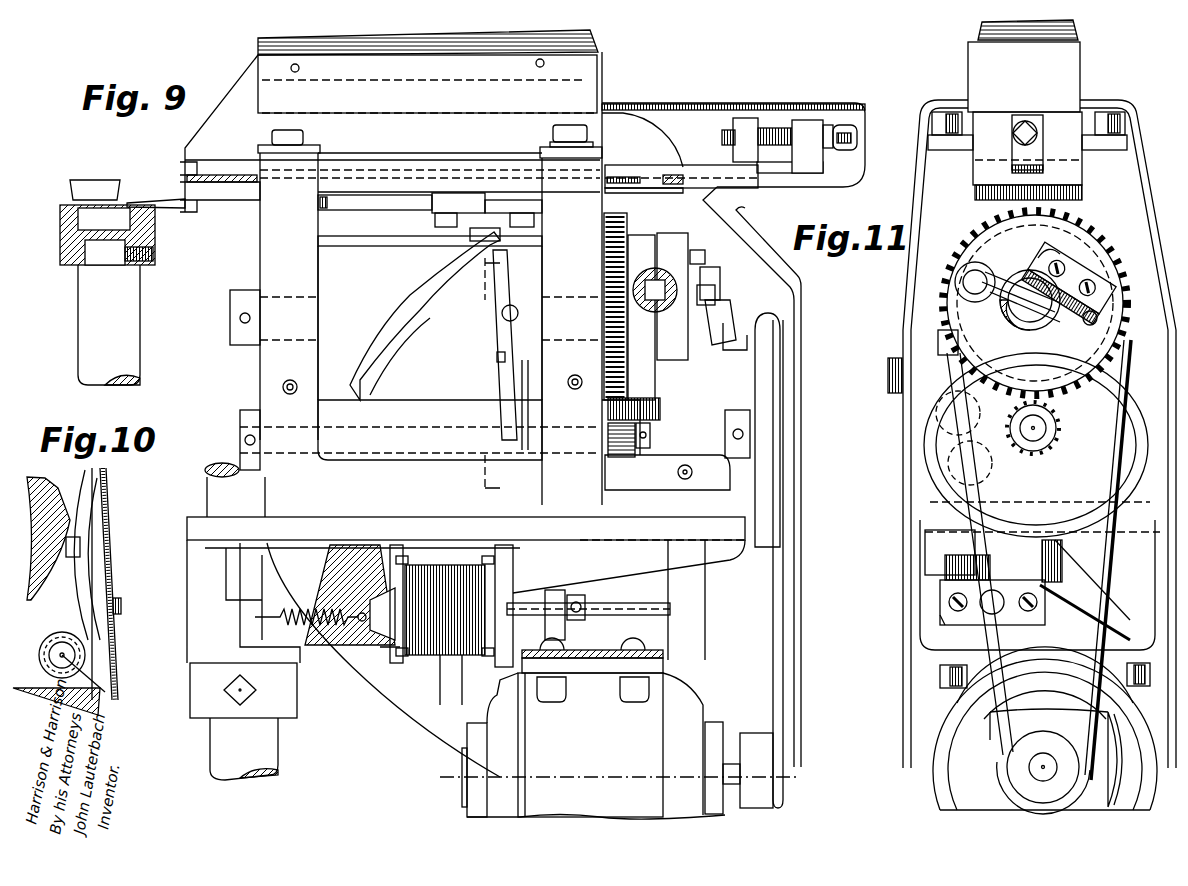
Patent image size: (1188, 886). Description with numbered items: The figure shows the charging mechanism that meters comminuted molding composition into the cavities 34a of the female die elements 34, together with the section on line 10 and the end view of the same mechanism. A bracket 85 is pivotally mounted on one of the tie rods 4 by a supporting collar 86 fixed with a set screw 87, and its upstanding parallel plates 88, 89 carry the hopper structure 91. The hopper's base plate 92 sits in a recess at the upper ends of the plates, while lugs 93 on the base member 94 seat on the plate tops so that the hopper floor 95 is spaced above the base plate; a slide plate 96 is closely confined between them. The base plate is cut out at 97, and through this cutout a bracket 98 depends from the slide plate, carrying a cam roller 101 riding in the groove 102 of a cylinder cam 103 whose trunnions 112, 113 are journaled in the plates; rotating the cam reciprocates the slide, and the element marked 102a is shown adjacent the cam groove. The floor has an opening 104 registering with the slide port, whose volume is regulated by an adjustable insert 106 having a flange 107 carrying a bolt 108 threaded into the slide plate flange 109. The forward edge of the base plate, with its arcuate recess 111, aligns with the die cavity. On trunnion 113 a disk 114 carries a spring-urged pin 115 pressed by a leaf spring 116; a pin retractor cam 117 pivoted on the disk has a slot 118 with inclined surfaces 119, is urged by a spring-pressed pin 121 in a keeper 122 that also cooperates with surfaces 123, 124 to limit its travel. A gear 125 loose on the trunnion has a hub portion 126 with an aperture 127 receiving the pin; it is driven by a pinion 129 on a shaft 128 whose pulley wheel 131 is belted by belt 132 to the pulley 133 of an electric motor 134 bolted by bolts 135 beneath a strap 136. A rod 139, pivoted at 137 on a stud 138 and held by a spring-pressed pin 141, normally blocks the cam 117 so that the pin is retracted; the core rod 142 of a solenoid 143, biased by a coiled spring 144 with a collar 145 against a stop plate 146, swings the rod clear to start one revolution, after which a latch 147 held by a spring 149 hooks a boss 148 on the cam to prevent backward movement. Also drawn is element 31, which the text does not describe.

In FIG. 9, the tie rod 4 is at (205, 469).
In FIG. 9, the section line 10 is at (503, 375).
In FIG. 9, the cylinder 31 is at (140, 312).
In FIG. 9, the female die element 34 is at (60, 244).
In FIG. 9, the cavity 34a is at (78, 217).
In FIG. 9, the bracket 85 is at (187, 523).
In FIG. 11, the bracket 85 is at (930, 521).
In FIG. 9, the supporting collar 86 is at (190, 709).
In FIG. 9, the set screw 87 is at (238, 692).
In FIG. 9, the plate 88 is at (260, 245).
In FIG. 9, the plate 89 is at (602, 203).
In FIG. 10, the plate 89 is at (108, 489).
In FIG. 11, the plate 89 is at (922, 196).
In FIG. 9, the hopper structure 91 is at (598, 40).
In FIG. 11, the hopper structure 91 is at (975, 31).
In FIG. 9, the base plate 92 is at (206, 202).
In FIG. 11, the base plate 92 is at (1082, 193).
In FIG. 9, the lug 93 is at (270, 150).
In FIG. 11, the lug 93 is at (940, 137).
In FIG. 9, the base member 94 is at (422, 104).
In FIG. 9, the floor 95 is at (185, 166).
In FIG. 9, the slide plate 96 is at (80, 180).
In FIG. 11, the slide plate 96 is at (1082, 172).
In FIG. 9, the cutout 97 is at (430, 212).
In FIG. 9, the bracket 98 is at (498, 223).
In FIG. 9, the cam roller 101 is at (494, 236).
In FIG. 9, the groove 102 is at (410, 313).
In FIG. 9, the frame 102a is at (412, 400).
In FIG. 9, the cylinder cam 103 is at (366, 246).
In FIG. 10, the cylinder cam 103 is at (77, 540).
In FIG. 9, the opening 104 is at (343, 165).
In FIG. 9, the adjustable insert 106 is at (628, 170).
In FIG. 11, the adjustable insert 106 is at (1012, 165).
In FIG. 9, the upstanding flange 107 is at (808, 120).
In FIG. 11, the upstanding flange 107 is at (1022, 120).
In FIG. 9, the bolt 108 is at (857, 140).
In FIG. 11, the bolt 108 is at (1040, 139).
In FIG. 9, the upstanding flange 109 is at (742, 118).
In FIG. 9, the arcuate recess 111 is at (160, 201).
In FIG. 9, the trunnion 112 is at (232, 330).
In FIG. 9, the trunnion 113 is at (572, 278).
In FIG. 9, the disk 114 is at (690, 245).
In FIG. 11, the disk 114 is at (1063, 236).
In FIG. 9, the pin 115 is at (716, 268).
In FIG. 11, the pin 115 is at (990, 270).
In FIG. 9, the leaf spring 116 is at (735, 306).
In FIG. 11, the leaf spring 116 is at (1020, 326).
In FIG. 9, the pin retractor cam 117 is at (719, 246).
In FIG. 11, the pin retractor cam 117 is at (1005, 282).
In FIG. 11, the slot 118 is at (963, 300).
In FIG. 9, the inclined surface 119 is at (718, 286).
In FIG. 11, the inclined surface 119 is at (955, 282).
In FIG. 11, the spring-pressed pin 121 is at (1090, 262).
In FIG. 11, the keeper 122 is at (1100, 276).
In FIG. 11, the surface 123 is at (1040, 258).
In FIG. 11, the surface 124 is at (1097, 313).
In FIG. 9, the gear 125 is at (630, 224).
In FIG. 11, the gear 125 is at (985, 236).
In FIG. 9, the hub portion 126 is at (640, 238).
In FIG. 9, the aperture 127 is at (648, 310).
In FIG. 9, the shaft 128 is at (240, 430).
In FIG. 11, the shaft 128 is at (1040, 428).
In FIG. 9, the pinion 129 is at (608, 441).
In FIG. 11, the pinion 129 is at (1036, 447).
In FIG. 9, the pulley wheel 131 is at (782, 351).
In FIG. 11, the pulley wheel 131 is at (1130, 459).
In FIG. 9, the belt 132 is at (784, 590).
In FIG. 11, the belt 132 is at (1072, 682).
In FIG. 9, the pulley 133 is at (786, 790).
In FIG. 11, the pulley 133 is at (1056, 755).
In FIG. 9, the electric motor 134 is at (612, 757).
In FIG. 11, the electric motor 134 is at (950, 788).
In FIG. 9, the bolt 135 is at (628, 696).
In FIG. 11, the bolt 135 is at (950, 690).
In FIG. 9, the strap 136 is at (665, 643).
In FIG. 11, the strap 136 is at (920, 646).
In FIG. 9, the pivot 137 is at (692, 473).
In FIG. 9, the stud 138 is at (700, 483).
In FIG. 11, the stud 138 is at (980, 481).
In FIG. 9, the rod 139 is at (692, 402).
In FIG. 11, the rod 139 is at (938, 341).
In FIG. 9, the spring-pressed pin 141 is at (660, 410).
In FIG. 11, the spring-pressed pin 141 is at (970, 413).
In FIG. 9, the core rod 142 is at (638, 613).
In FIG. 11, the core rod 142 is at (950, 603).
In FIG. 9, the solenoid 143 is at (425, 660).
In FIG. 11, the solenoid 143 is at (945, 569).
In FIG. 9, the coiled spring 144 is at (322, 650).
In FIG. 9, the collar 145 is at (574, 595).
In FIG. 9, the stop plate 146 is at (552, 590).
In FIG. 11, the stop plate 146 is at (945, 616).
In FIG. 9, the latch 147 is at (500, 344).
In FIG. 10, the latch 147 is at (98, 561).
In FIG. 9, the boss 148 is at (500, 318).
In FIG. 10, the boss 148 is at (80, 540).
In FIG. 9, the spring 149 is at (510, 379).
In FIG. 10, the spring 149 is at (88, 680).